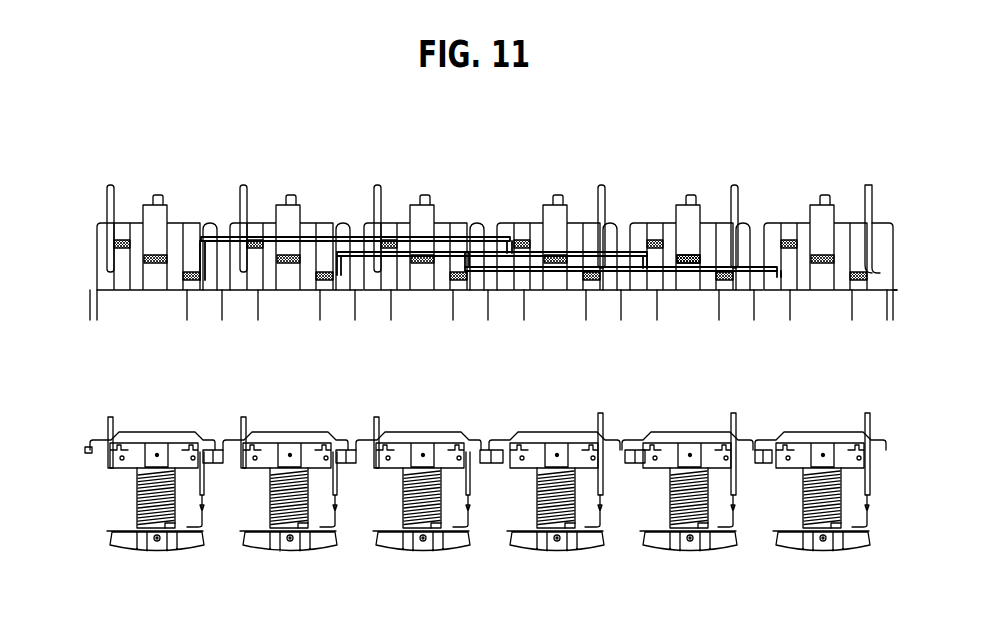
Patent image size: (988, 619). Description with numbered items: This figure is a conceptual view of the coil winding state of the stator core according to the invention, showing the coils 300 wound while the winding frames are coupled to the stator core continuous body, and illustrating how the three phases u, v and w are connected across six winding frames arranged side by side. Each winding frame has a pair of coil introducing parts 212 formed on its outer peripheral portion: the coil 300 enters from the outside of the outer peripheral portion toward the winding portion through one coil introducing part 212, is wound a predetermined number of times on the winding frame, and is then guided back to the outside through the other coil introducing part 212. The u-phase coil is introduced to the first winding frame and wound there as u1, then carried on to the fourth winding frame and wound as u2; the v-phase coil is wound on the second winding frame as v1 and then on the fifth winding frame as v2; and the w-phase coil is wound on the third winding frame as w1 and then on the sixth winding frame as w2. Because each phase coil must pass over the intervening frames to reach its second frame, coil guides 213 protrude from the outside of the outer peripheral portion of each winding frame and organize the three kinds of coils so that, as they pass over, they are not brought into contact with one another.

The coil 300 is at (107, 203).
The coil introducing part 212 is at (202, 237).
The coil guide 213 is at (690, 257).
The u-phase coil wound on first winding frame u1 is at (108, 402).
The v-phase coil wound on second winding frame v1 is at (241, 402).
The w-phase coil wound on third winding frame w1 is at (374, 402).
The u-phase coil wound on fourth winding frame u2 is at (598, 400).
The v-phase coil wound on fifth winding frame v2 is at (731, 400).
The w-phase coil wound on sixth winding frame w2 is at (865, 400).